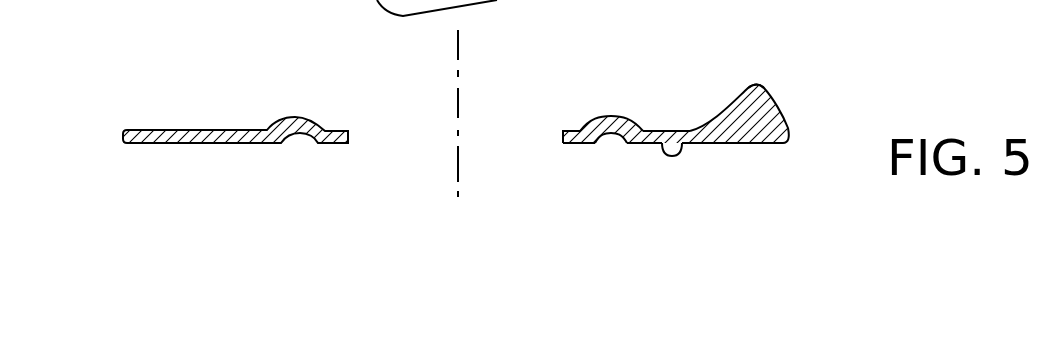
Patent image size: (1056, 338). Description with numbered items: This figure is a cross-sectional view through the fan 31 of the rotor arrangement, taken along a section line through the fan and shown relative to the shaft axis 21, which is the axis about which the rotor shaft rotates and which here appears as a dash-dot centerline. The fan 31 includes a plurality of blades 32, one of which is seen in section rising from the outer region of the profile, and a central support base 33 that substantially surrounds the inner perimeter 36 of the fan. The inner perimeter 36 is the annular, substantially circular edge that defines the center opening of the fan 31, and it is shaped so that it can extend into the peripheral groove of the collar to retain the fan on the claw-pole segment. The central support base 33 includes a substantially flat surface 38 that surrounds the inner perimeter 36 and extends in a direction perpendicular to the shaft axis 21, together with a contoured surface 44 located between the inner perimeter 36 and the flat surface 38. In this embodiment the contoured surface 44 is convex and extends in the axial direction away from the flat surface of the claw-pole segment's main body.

The shaft axis 21 is at (458, 100).
The fan 31 is at (781, 95).
The blades 32 is at (742, 104).
The central support base 33 is at (704, 113).
The inner perimeter 36 is at (578, 132).
The substantially flat surface 38 is at (682, 148).
The contoured surface 44 is at (626, 118).